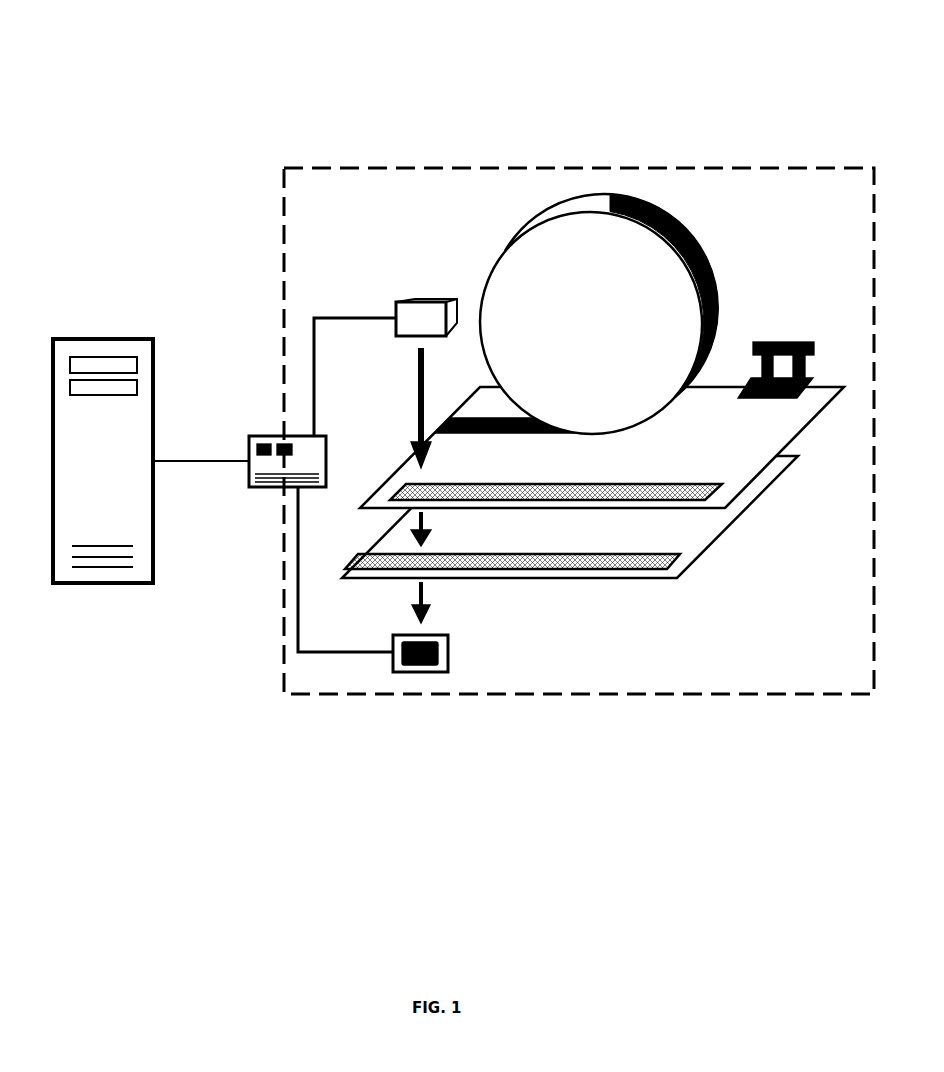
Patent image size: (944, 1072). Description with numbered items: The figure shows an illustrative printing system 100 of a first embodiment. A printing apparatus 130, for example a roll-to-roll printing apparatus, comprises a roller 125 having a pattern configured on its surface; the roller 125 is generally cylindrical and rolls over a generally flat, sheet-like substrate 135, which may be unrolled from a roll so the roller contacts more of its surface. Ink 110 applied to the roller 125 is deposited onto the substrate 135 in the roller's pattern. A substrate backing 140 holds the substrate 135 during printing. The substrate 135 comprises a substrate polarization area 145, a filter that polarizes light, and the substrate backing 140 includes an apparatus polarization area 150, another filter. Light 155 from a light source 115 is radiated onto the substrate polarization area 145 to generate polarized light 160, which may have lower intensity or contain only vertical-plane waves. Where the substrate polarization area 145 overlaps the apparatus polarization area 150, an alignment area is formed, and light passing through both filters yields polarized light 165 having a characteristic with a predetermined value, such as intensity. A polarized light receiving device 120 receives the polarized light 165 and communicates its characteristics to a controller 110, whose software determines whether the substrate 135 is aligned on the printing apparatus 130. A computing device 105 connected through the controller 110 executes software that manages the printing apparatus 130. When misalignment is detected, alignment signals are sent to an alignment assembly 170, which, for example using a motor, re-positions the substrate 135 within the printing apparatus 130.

The printing system 100 is at (611, 73).
The computing device 105 is at (117, 337).
The controller 110 is at (257, 433).
The light source 115 is at (440, 297).
The polarized light receiving device 120 is at (441, 633).
The roller 125 is at (527, 224).
The printing apparatus 130 is at (714, 166).
The substrate 135 is at (828, 406).
The substrate backing 140 is at (780, 478).
The substrate polarization area 145 is at (695, 482).
The apparatus polarization area 150 is at (663, 553).
The light 155 is at (417, 411).
The polarized light 160 is at (418, 536).
The polarized light 165 is at (419, 608).
The alignment assembly 170 is at (792, 341).